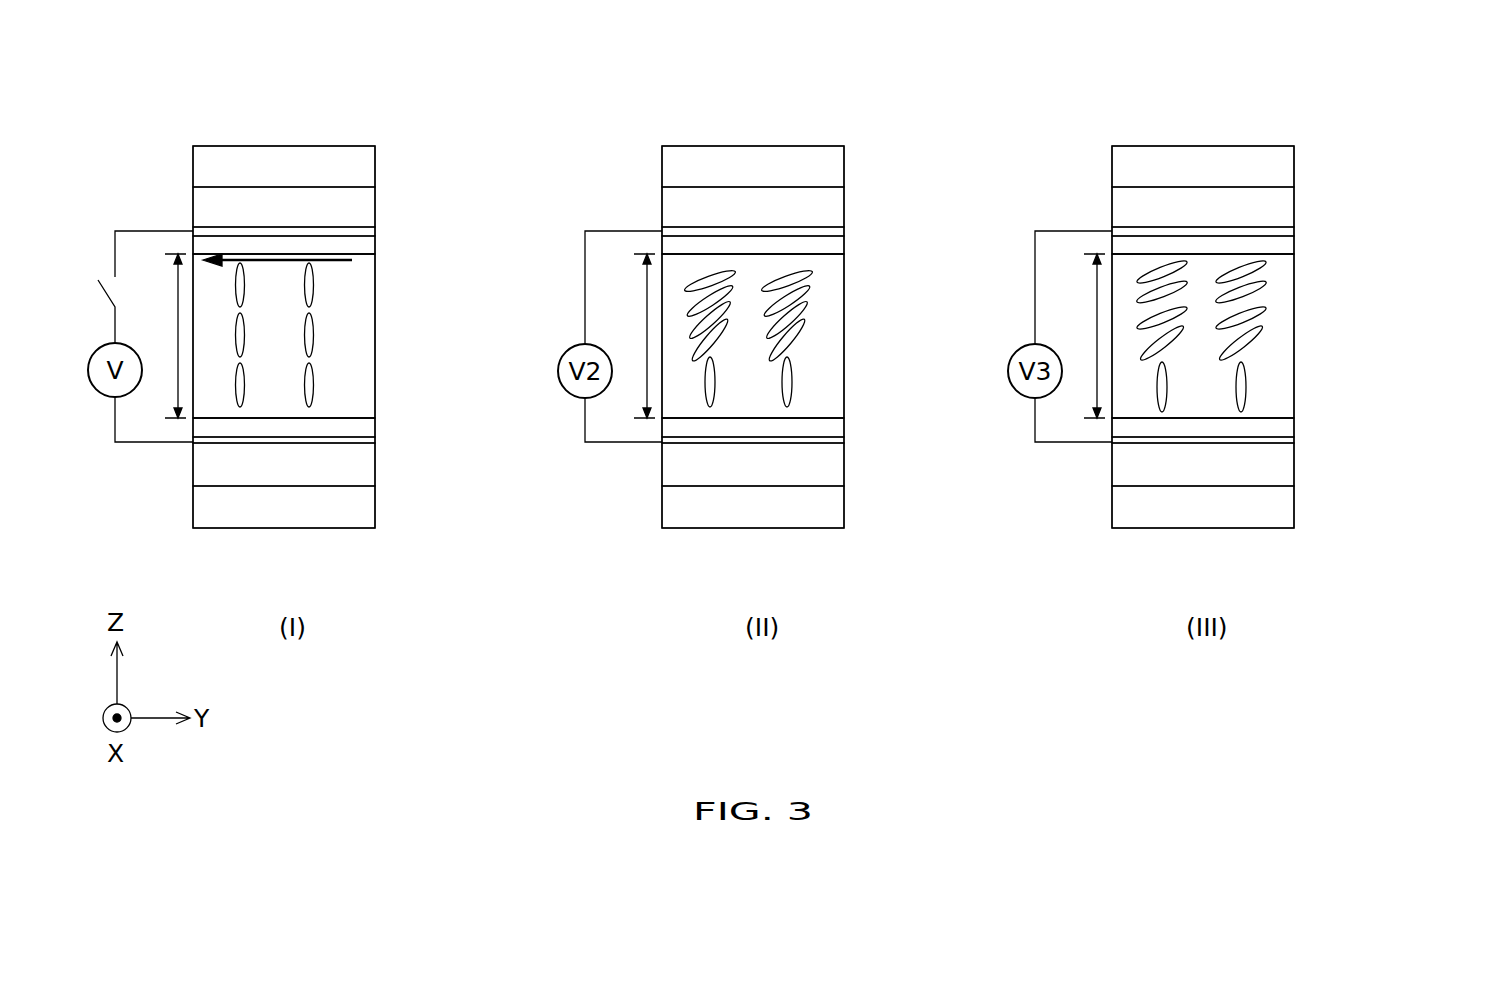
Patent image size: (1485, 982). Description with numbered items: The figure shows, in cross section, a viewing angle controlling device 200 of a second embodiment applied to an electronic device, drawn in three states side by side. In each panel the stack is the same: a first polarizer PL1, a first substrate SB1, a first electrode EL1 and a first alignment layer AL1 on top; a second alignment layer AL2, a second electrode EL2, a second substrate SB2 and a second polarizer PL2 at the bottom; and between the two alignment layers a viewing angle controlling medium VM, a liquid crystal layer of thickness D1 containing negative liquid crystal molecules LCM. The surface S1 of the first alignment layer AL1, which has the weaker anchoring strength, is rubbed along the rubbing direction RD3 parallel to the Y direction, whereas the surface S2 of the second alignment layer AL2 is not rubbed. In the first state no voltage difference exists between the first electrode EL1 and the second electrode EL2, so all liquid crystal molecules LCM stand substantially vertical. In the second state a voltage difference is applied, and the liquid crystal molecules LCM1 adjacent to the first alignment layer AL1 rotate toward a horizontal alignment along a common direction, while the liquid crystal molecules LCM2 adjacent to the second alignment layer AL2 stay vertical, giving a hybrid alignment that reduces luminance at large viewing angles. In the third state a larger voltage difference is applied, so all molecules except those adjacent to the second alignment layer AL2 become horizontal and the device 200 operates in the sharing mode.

The viewing angle controlling device 200 is at (163, 124).
The rubbing direction RD3 is at (265, 258).
The first polarizer PL1 is at (368, 166).
The first substrate SB1 is at (368, 201).
The first electrode EL1 is at (368, 231).
The first alignment layer AL1 is at (368, 244).
The surface of the first alignment layer S1 is at (363, 254).
The viewing angle controlling medium VM is at (360, 265).
The liquid crystal molecules adjacent to the first alignment layer LCM1 is at (312, 285).
The liquid crystal molecules LCM is at (312, 335).
The liquid crystal molecules adjacent to the second alignment layer LCM2 is at (312, 385).
The surface of the second alignment layer S2 is at (368, 418).
The second alignment layer AL2 is at (368, 430).
The second electrode EL2 is at (368, 445).
The second substrate SB2 is at (368, 490).
The second polarizer PL2 is at (368, 508).
The thickness of the viewing angle controlling medium D1 is at (625, 336).